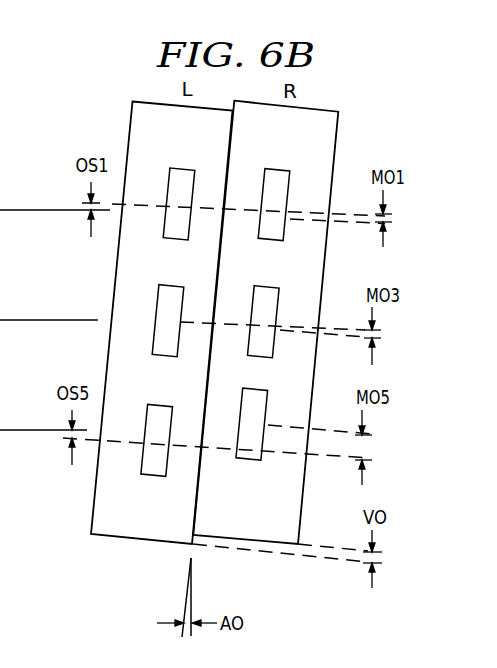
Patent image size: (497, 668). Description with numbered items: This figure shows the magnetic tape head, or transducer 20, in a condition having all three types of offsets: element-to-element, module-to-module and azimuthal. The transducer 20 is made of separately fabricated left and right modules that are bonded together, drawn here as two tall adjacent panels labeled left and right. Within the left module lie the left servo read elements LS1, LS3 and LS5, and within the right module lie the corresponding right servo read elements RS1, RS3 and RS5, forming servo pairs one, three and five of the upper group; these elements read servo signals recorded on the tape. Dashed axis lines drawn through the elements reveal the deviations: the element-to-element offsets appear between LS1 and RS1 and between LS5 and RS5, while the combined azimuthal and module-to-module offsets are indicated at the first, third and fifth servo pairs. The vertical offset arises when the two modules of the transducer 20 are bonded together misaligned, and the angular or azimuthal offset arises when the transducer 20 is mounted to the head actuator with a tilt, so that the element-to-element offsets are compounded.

The magnetic tape head 20 is at (325, 109).
The left servo read element LS1 is at (181, 168).
The left servo read element LS3 is at (157, 300).
The left servo read element LS5 is at (147, 477).
The right servo read element RS1 is at (279, 169).
The right servo read element RS3 is at (254, 300).
The right servo read element RS5 is at (253, 460).